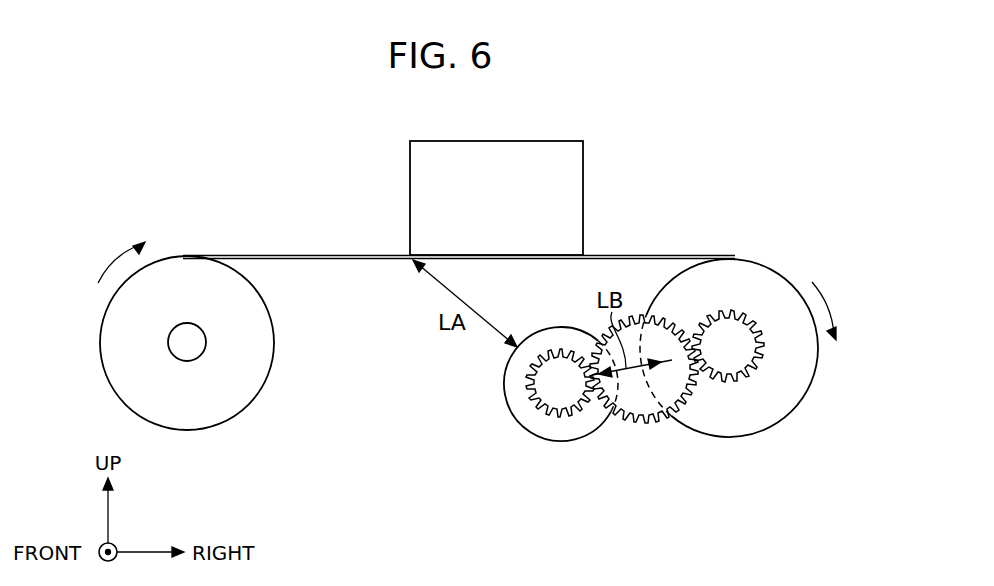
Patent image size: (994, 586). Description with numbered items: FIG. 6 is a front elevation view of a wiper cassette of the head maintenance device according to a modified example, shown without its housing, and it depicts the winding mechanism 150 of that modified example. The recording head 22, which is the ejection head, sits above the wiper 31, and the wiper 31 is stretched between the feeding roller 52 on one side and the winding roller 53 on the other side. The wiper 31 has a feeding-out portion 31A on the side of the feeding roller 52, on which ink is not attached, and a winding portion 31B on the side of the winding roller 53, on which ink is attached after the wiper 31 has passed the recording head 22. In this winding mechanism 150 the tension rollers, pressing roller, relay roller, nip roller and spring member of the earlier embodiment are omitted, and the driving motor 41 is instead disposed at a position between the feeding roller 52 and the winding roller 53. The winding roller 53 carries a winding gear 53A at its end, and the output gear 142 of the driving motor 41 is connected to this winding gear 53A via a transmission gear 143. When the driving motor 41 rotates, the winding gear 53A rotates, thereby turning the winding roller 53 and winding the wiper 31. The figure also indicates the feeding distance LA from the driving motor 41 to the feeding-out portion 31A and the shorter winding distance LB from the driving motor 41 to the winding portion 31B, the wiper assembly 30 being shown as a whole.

The recording head 22 is at (546, 148).
The winding mechanism 150 is at (678, 142).
The belt unit 30 is at (793, 213).
The wiper 31 is at (623, 254).
The feeding-out portion 31A is at (170, 256).
The winding portion 31B is at (746, 257).
The feeding roller 52 is at (188, 335).
The winding roller 53 is at (736, 330).
The winding gear 53A is at (735, 384).
The driving motor 41 is at (565, 435).
The output gear 142 is at (533, 386).
The transmission gear 143 is at (641, 405).